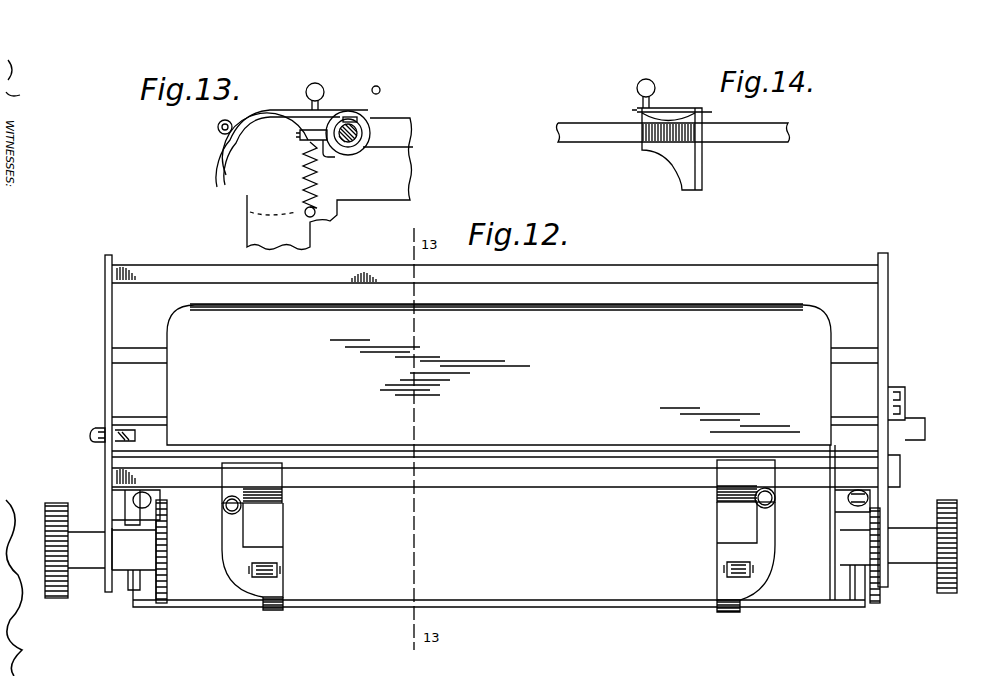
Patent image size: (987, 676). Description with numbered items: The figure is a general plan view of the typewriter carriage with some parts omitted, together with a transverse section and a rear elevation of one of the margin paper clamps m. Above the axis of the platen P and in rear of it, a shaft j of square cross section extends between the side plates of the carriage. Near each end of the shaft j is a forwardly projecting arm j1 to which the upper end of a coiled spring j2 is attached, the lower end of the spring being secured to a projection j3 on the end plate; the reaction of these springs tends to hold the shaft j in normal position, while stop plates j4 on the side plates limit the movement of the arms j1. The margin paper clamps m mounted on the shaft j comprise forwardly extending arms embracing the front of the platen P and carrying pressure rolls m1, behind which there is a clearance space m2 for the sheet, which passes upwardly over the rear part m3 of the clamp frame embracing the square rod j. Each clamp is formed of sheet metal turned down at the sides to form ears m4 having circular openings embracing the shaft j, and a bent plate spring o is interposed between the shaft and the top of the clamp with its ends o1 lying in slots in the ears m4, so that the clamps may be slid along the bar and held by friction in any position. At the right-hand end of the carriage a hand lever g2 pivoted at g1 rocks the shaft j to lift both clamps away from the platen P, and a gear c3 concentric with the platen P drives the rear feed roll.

In FIG. 12, the shaft j is at (538, 478).
In FIG. 13, the shaft j is at (358, 128).
In FIG. 14, the shaft j is at (606, 133).
In FIG. 13, the forwardly projecting arm j1 is at (326, 130).
In FIG. 13, the coiled spring j2 is at (320, 183).
In FIG. 13, the projection j3 is at (315, 217).
In FIG. 13, the stop plate j4 is at (330, 156).
In FIG. 12, the margin paper clamp m is at (278, 578).
In FIG. 13, the margin paper clamp m is at (230, 150).
In FIG. 12, the pressure roll m1 is at (280, 566).
In FIG. 13, the pressure roll m1 is at (220, 122).
In FIG. 12, the clearance space m2 is at (262, 523).
In FIG. 12, the rear part of the margin clamp frame m3 is at (258, 473).
In FIG. 13, the rear part of the margin clamp frame m3 is at (350, 113).
In FIG. 13, the ear m4 is at (402, 153).
In FIG. 14, the ear m4 is at (640, 148).
In FIG. 14, the bent plate spring o is at (665, 122).
In FIG. 13, the spring end o1 is at (355, 118).
In FIG. 14, the spring end o1 is at (634, 110).
In FIG. 13, the platen P is at (232, 188).
In FIG. 12, the pivot g1 is at (905, 392).
In FIG. 12, the hand lever g2 is at (925, 438).
In FIG. 12, the gear c3 is at (880, 603).